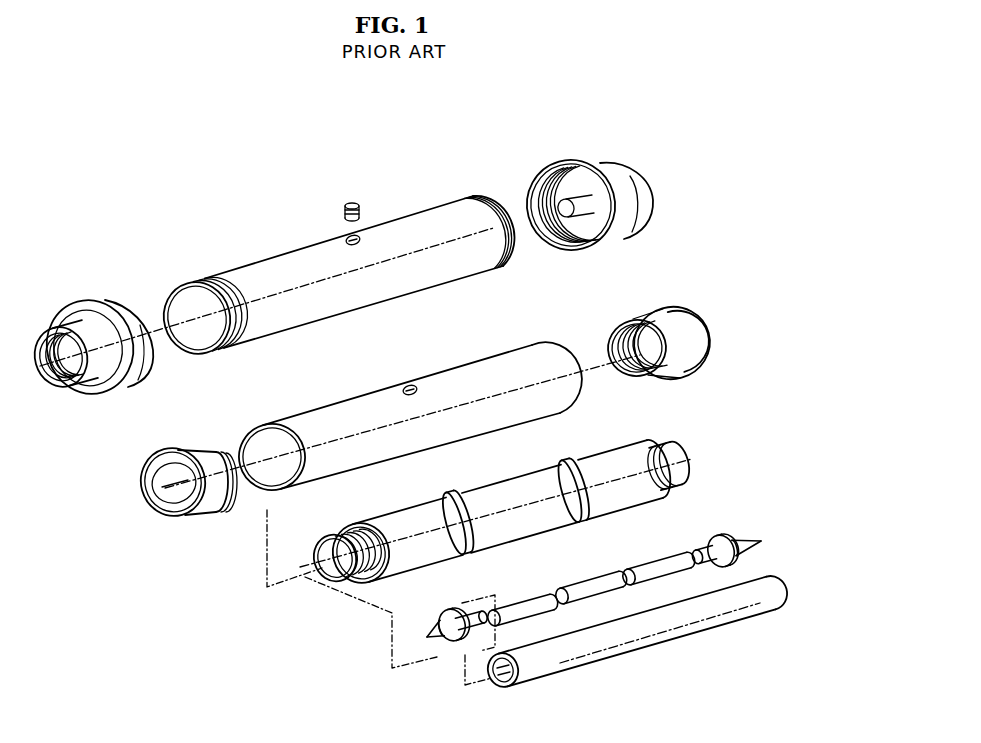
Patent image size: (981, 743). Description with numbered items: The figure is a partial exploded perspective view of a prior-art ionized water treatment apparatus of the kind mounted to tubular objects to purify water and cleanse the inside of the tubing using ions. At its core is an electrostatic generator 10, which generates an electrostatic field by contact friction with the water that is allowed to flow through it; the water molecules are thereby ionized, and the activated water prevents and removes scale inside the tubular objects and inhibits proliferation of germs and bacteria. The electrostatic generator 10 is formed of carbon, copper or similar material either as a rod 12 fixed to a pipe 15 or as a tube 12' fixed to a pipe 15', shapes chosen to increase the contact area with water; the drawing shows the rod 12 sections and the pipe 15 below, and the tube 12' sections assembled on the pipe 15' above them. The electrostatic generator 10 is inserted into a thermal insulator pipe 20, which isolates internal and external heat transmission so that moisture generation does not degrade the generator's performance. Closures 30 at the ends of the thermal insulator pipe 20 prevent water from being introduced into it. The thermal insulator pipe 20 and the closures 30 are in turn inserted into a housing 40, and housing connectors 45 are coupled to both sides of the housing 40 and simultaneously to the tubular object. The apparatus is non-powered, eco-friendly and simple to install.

The electrostatic generator 10 is at (370, 627).
The rod 12 is at (594, 584).
The tube 12' is at (508, 494).
The pipe 15 is at (635, 634).
The pipe 15' is at (495, 515).
The thermal insulator pipe 20 is at (452, 368).
The closures 30 is at (170, 445).
The housing 40 is at (397, 213).
The housing connectors 45 is at (79, 303).